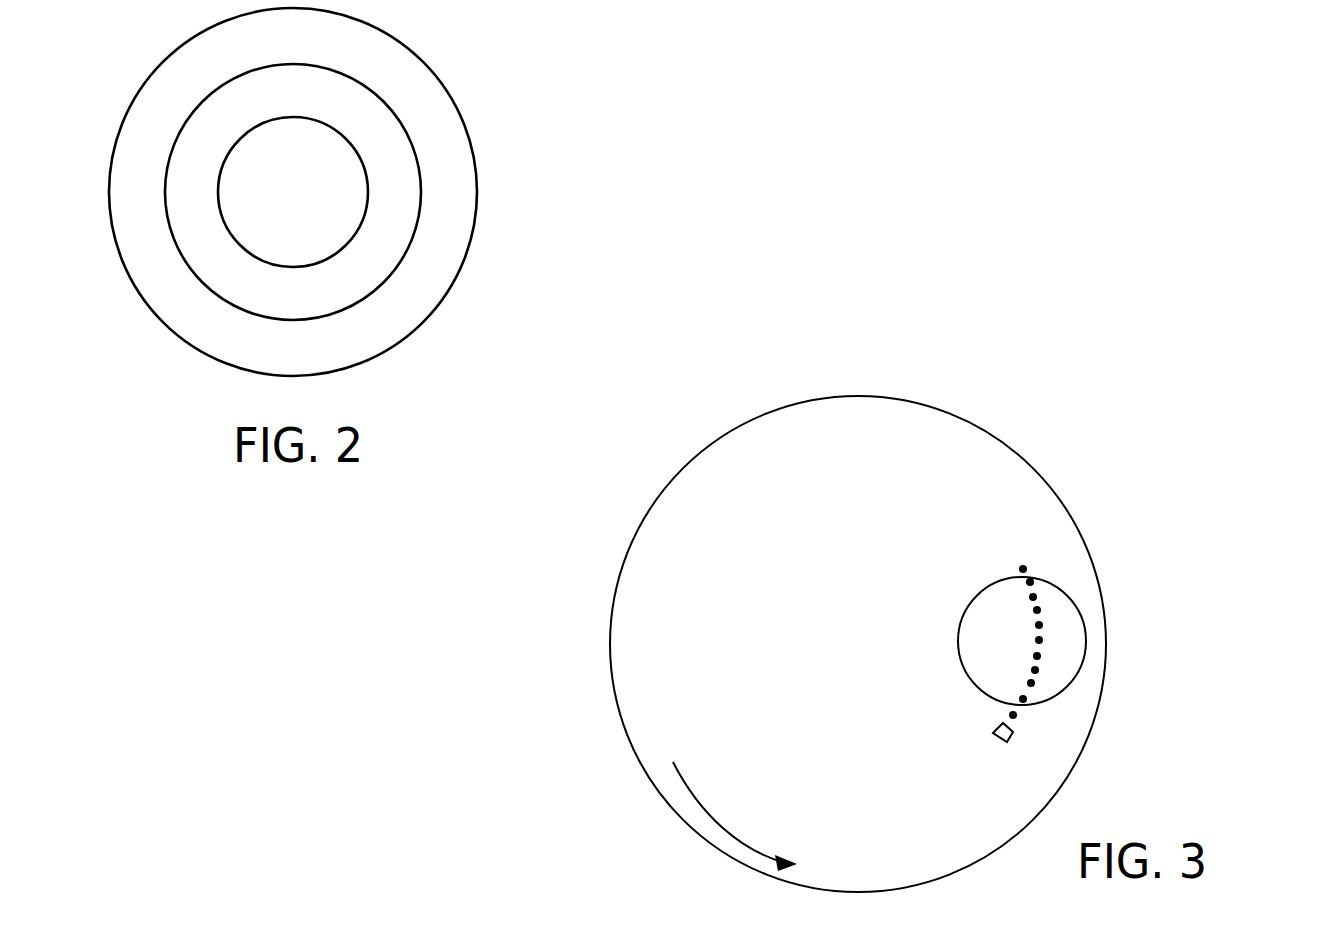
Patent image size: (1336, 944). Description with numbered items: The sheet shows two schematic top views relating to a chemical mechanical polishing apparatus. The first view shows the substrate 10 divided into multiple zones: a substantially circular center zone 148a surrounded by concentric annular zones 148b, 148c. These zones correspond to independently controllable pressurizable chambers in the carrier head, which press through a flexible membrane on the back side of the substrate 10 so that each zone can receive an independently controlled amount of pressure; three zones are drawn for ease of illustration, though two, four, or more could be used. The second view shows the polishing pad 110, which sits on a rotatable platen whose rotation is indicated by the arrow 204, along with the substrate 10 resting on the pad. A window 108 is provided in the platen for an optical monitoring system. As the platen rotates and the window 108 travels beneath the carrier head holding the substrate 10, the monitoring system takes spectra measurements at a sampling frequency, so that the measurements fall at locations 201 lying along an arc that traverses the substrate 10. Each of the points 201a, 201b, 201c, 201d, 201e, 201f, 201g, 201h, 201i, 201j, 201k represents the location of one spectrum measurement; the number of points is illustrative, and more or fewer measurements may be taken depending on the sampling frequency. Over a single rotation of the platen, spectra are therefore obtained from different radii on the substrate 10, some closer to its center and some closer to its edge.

In FIG. 2, the substrate 10 is at (420, 328).
In FIG. 3, the substrate 10 is at (988, 698).
In FIG. 2, the center zone 148a is at (323, 178).
In FIG. 2, the zone 148b is at (393, 190).
In FIG. 2, the zone 148c is at (442, 247).
In FIG. 3, the polishing pad 110 is at (878, 876).
In FIG. 3, the arrow 204 is at (737, 848).
In FIG. 3, the window 108 is at (1013, 732).
In FIG. 3, the locations 201 is at (1207, 450).
In FIG. 3, the point 201a is at (1013, 715).
In FIG. 3, the point 201b is at (1023, 699).
In FIG. 3, the point 201c is at (1031, 683).
In FIG. 3, the point 201d is at (1035, 670).
In FIG. 3, the point 201e is at (1037, 656).
In FIG. 3, the point 201f is at (1039, 640).
In FIG. 3, the point 201g is at (1039, 625).
In FIG. 3, the point 201h is at (1037, 610).
In FIG. 3, the point 201i is at (1033, 597).
In FIG. 3, the point 201j is at (1030, 582).
In FIG. 3, the point 201k is at (1023, 569).